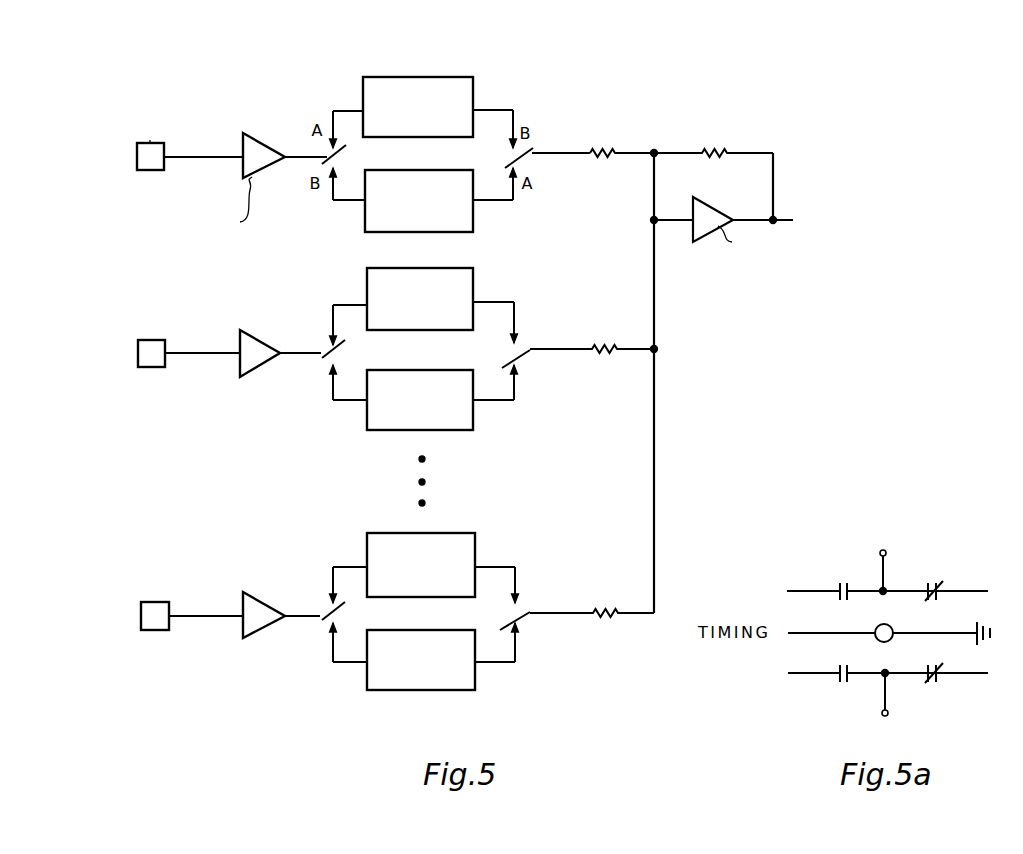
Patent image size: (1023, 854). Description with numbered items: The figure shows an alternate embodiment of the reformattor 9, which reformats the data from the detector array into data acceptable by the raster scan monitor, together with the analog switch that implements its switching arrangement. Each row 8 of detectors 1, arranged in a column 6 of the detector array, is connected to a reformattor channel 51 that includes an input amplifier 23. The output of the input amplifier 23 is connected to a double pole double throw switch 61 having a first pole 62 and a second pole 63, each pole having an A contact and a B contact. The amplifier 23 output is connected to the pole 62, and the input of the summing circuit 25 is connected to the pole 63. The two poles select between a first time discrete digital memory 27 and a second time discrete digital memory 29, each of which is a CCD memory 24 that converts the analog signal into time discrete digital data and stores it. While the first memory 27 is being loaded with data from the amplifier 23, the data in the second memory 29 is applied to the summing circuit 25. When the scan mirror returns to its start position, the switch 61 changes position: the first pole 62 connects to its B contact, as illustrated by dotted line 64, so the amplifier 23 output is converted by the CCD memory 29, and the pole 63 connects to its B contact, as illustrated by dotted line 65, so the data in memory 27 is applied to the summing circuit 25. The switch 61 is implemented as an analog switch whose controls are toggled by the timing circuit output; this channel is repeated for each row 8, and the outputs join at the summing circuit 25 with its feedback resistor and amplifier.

In FIG. 5, the detector 1 is at (153, 386).
In FIG. 5, the column 6 is at (148, 131).
In FIG. 5, the row 8 is at (137, 157).
In FIG. 5, the reformattor 9 is at (631, 681).
In FIG. 5, the input amplifier 23 is at (250, 170).
In FIG. 5, the CCD memory 24 is at (392, 77).
In FIG. 5, the summing circuit 25 is at (687, 145).
In FIG. 5, the first time discrete digital memory 27 is at (442, 77).
In FIG. 5, the second time discrete digital memory 29 is at (460, 430).
In FIG. 5, the reformattor channel 51 is at (217, 147).
In FIG. 5, the double pole double throw switch 61 is at (311, 142).
In FIG. 5A, the double pole double throw switch 61 is at (802, 745).
In FIG. 5, the first pole 62 is at (340, 146).
In FIG. 5A, the first pole 62 is at (889, 702).
In FIG. 5, the second pole 63 is at (534, 148).
In FIG. 5A, the second pole 63 is at (887, 574).
In FIG. 5, the dotted line 64 is at (312, 168).
In FIG. 5, the dotted line 65 is at (504, 160).